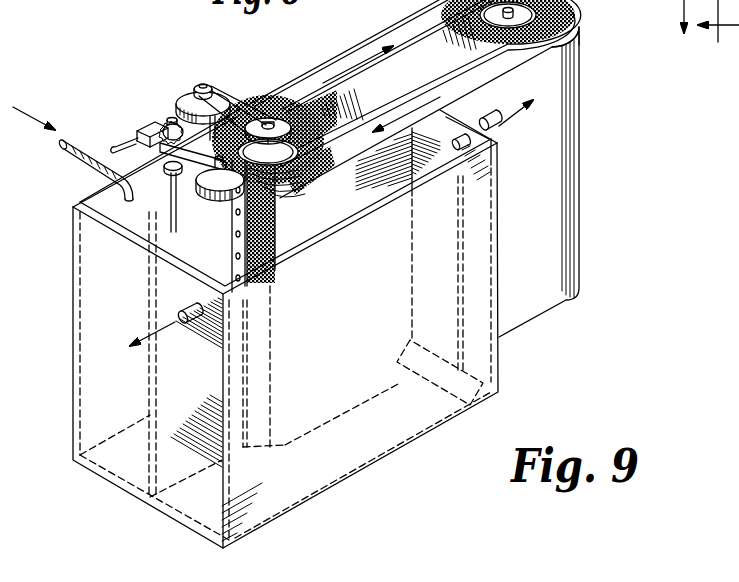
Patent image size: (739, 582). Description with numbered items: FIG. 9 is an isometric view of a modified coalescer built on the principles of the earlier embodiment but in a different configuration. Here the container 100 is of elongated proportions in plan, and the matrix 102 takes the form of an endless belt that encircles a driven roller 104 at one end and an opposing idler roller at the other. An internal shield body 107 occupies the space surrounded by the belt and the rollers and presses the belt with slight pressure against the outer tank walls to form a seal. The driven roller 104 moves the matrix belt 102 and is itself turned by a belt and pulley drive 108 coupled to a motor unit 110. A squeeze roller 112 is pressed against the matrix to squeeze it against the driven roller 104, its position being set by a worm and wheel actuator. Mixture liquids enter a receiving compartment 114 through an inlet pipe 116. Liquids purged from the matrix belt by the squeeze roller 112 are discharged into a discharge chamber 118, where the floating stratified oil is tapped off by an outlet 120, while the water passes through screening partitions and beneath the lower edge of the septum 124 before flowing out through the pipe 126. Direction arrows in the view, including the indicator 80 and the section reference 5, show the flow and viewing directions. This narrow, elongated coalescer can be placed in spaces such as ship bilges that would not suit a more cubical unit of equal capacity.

The container 100 is at (555, 247).
The matrix 102 is at (580, 32).
The driven roller 104 is at (278, 210).
The internal shield body 107 is at (427, 57).
The belt and pulley drive 108 is at (208, 88).
The motor unit 110 is at (184, 100).
The squeeze roller 112 is at (208, 202).
The receiving compartment 114 is at (76, 210).
The inlet pipe 116 is at (70, 153).
The discharge chamber 118 is at (279, 252).
The outlet 120 is at (190, 321).
The septum 124 is at (467, 352).
The pipe 126 is at (498, 126).
The direction arrow 80 is at (662, 0).
The section line indicator 5 is at (718, 26).